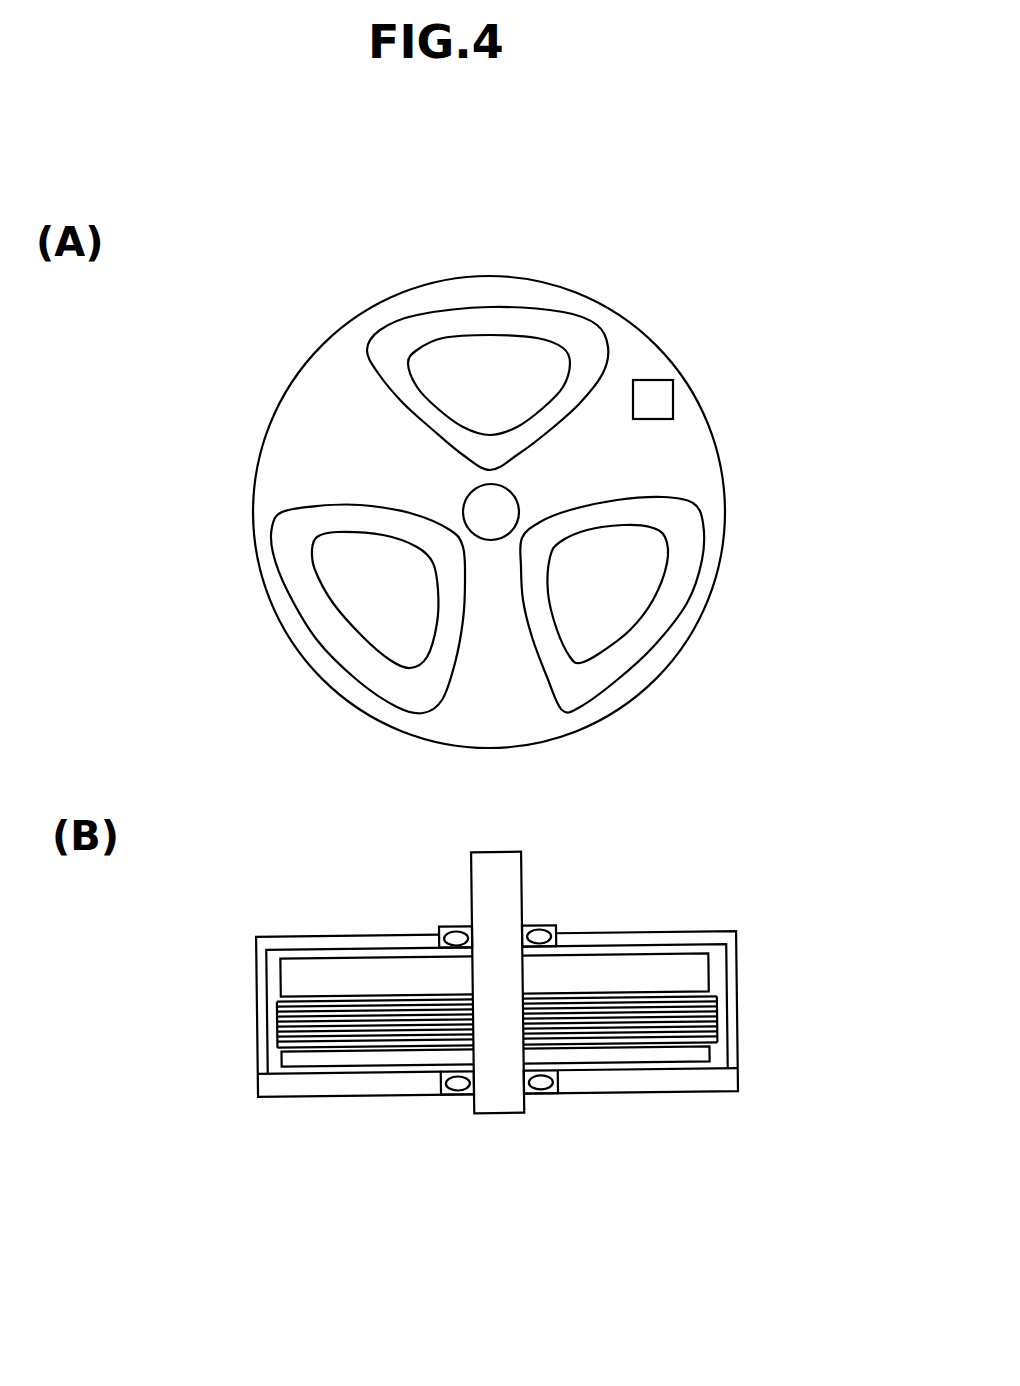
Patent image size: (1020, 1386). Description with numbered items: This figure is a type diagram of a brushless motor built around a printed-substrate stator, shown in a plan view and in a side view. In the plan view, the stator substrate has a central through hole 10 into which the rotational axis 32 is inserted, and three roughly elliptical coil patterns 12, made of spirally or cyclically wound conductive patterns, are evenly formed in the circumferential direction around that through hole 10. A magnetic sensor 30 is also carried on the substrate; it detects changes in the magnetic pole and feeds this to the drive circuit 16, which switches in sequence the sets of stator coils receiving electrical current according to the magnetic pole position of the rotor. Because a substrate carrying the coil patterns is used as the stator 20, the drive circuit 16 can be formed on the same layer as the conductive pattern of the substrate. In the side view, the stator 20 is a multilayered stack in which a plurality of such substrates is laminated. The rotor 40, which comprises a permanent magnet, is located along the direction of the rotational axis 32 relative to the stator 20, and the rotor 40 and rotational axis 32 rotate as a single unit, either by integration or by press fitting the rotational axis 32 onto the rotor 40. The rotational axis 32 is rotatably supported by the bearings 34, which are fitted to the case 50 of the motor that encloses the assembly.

The through hole 10 is at (519, 498).
The coil patterns 12 is at (600, 326).
The drive circuit 16 is at (328, 1064).
The stator 20 is at (277, 1020).
The magnetic sensor 30 is at (663, 404).
The rotational axis 32 is at (502, 1091).
The bearings 34 is at (542, 1094).
The rotor 40 is at (678, 970).
The case 50 is at (660, 350).